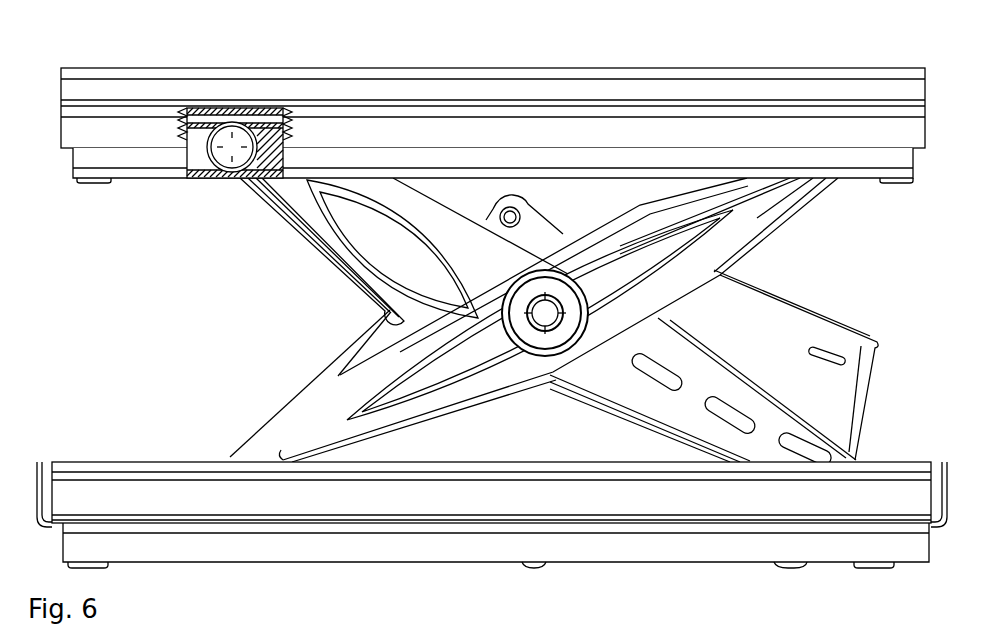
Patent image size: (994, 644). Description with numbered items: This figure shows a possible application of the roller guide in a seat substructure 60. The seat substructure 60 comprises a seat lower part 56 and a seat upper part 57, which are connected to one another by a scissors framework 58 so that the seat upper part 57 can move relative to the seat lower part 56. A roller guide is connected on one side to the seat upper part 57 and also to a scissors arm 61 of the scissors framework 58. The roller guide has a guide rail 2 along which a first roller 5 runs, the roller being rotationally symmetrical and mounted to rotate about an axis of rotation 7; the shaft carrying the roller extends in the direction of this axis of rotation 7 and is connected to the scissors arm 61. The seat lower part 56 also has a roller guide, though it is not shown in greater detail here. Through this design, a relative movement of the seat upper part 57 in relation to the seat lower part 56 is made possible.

The guide rail 2 is at (201, 108).
The first roller 5 is at (242, 126).
The axis of rotation 7 is at (186, 180).
The seat lower part 56 is at (120, 462).
The seat upper part 57 is at (119, 68).
The scissors framework 58 is at (240, 320).
The seat substructure 60 is at (838, 40).
The scissors arm 61 is at (278, 206).